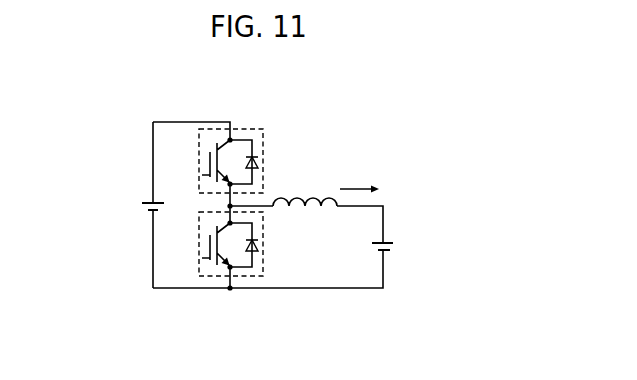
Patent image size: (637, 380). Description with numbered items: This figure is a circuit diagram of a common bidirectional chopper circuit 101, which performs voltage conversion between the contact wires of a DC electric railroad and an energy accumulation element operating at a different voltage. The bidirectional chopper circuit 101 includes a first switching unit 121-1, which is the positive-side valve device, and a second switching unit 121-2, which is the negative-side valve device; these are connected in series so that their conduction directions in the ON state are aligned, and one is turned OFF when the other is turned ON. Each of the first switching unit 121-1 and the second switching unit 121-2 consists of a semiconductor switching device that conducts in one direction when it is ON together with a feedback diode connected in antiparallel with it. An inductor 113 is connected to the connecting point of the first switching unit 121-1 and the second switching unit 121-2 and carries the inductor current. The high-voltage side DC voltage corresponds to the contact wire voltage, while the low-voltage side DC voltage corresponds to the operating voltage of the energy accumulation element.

The bidirectional chopper circuit 101 is at (408, 120).
The inductor 113 is at (322, 193).
The first switching unit 121-1 is at (246, 128).
The second switching unit 121-2 is at (263, 260).